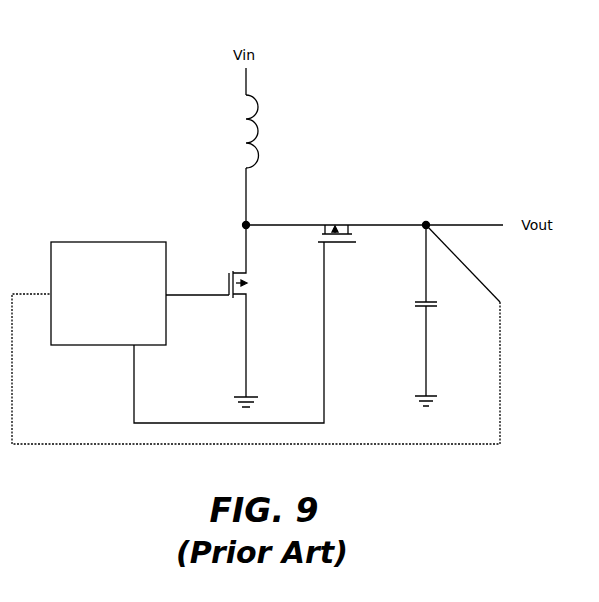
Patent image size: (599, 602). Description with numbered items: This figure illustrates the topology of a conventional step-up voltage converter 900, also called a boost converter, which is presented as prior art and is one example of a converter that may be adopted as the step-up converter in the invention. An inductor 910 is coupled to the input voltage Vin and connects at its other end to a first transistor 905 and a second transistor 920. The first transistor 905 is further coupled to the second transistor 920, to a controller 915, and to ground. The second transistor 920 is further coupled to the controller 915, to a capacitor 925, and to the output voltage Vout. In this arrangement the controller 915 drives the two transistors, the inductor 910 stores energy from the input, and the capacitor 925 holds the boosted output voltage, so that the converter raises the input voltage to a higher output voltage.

The step-up voltage converter 900 is at (460, 93).
The first transistor 905 is at (224, 316).
The inductor 910 is at (270, 131).
The controller 915 is at (187, 321).
The second transistor 920 is at (337, 220).
The capacitor 925 is at (457, 315).